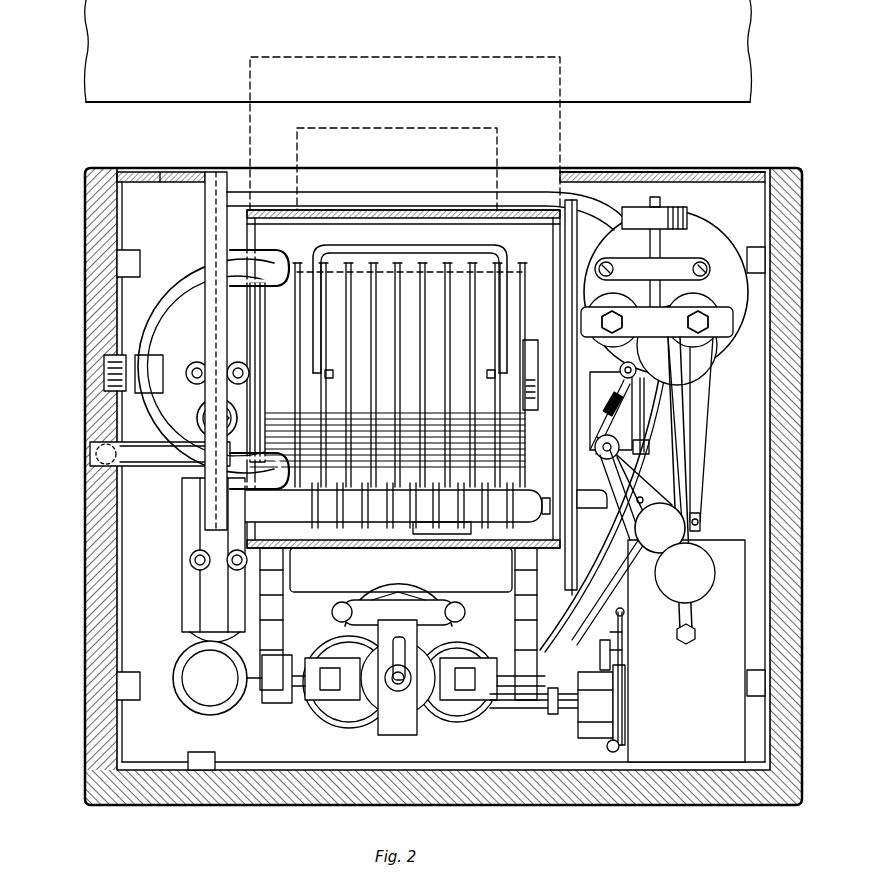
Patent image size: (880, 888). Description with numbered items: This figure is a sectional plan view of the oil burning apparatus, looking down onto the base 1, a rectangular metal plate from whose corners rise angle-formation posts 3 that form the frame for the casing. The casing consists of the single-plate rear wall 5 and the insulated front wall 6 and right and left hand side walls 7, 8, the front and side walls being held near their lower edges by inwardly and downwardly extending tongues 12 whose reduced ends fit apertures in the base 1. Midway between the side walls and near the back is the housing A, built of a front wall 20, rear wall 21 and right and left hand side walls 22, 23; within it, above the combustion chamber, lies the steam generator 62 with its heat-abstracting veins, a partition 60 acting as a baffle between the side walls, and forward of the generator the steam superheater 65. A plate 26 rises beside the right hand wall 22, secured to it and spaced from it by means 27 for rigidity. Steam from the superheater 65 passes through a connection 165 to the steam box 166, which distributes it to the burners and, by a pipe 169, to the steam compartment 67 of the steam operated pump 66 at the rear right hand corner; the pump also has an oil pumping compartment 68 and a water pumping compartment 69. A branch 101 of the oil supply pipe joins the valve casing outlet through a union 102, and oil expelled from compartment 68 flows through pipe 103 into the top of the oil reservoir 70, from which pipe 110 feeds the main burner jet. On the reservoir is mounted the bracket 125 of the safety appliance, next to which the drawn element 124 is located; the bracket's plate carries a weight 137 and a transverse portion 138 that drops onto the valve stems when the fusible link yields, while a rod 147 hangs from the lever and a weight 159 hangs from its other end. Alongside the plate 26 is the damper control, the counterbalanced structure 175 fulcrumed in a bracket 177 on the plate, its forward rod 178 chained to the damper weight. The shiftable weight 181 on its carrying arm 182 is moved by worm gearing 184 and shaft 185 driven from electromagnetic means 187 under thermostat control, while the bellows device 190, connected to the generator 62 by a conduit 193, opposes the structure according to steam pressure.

The base 1 is at (283, 727).
The post 3 is at (165, 182).
The rear wall 5 is at (622, 172).
The front wall 6 is at (455, 778).
The right hand side wall 7 is at (771, 448).
The left hand side wall 8 is at (86, 520).
The tongues 12 is at (755, 247).
The front wall of housing 20 is at (458, 548).
The rear wall of housing 21 is at (392, 218).
The right hand side wall of housing 22 is at (565, 452).
The left hand side wall of housing 23 is at (250, 237).
The plate 26 is at (572, 562).
The securing and spacing means 27 is at (565, 238).
The partition 60 is at (297, 262).
The steam generator 62 is at (432, 290).
The steam superheater 65 is at (375, 508).
The steam operated pump 66 is at (722, 352).
The steam compartment 67 is at (716, 296).
The oil pumping compartment 68 is at (698, 372).
The water pumping compartment 69 is at (690, 197).
The oil reservoir 70 is at (686, 651).
The branch pipe 101 is at (692, 513).
The union 102 is at (700, 522).
The oil discharge pipe 103 is at (682, 428).
The pipe 110 is at (532, 708).
The plate 124 is at (626, 663).
The bracket 125 is at (626, 641).
The weight 137 is at (596, 712).
The transverse portion 138 is at (596, 690).
The rod 147 is at (626, 614).
The weight 159 is at (606, 747).
The connection 165 is at (372, 548).
The steam box 166 is at (335, 635).
The pipe 169 is at (556, 627).
The counterbalanced structure 175 is at (612, 400).
The bracket 177 is at (605, 268).
The rod 178 is at (577, 492).
The shiftable weight 181 is at (675, 553).
The carrying arm 182 is at (633, 487).
The worm gearing 184 is at (632, 436).
The shaft 185 is at (628, 405).
The electromagnetic means 187 is at (690, 314).
The pressure operated device 190 is at (690, 238).
The conduit 193 is at (340, 192).